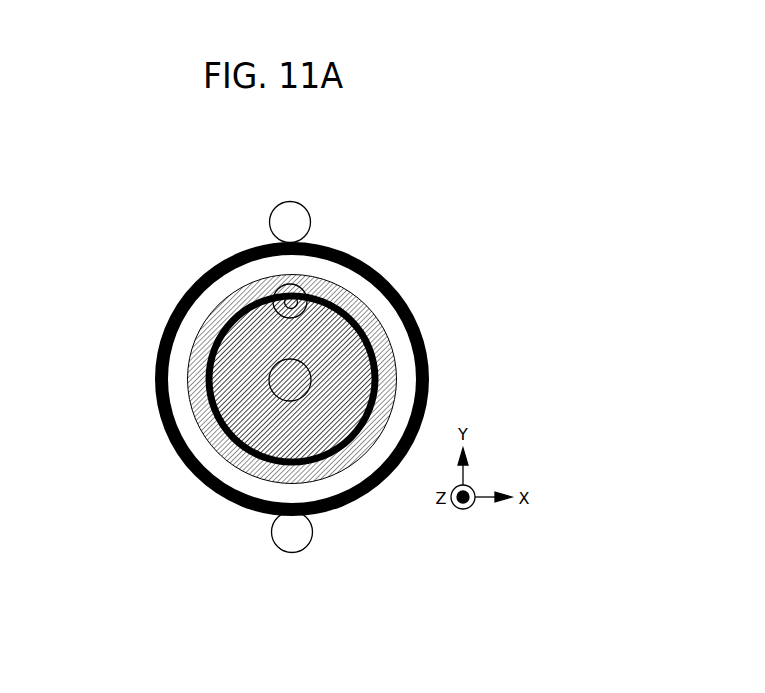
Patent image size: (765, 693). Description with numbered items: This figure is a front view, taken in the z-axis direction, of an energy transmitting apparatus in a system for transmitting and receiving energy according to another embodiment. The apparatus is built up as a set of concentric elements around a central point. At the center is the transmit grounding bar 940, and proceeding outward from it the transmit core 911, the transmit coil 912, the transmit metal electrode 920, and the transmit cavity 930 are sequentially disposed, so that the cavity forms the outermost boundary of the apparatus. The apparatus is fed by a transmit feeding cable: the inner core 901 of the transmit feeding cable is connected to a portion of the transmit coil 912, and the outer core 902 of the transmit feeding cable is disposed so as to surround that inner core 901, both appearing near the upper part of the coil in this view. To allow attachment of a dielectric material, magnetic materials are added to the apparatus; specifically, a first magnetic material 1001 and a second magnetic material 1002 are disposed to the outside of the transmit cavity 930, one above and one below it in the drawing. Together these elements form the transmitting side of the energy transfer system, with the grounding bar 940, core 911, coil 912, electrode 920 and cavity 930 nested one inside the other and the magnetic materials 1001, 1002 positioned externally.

The inner core of the transmit feeding cable 901 is at (274, 297).
The outer core of the transmit feeding cable 902 is at (305, 288).
The transmit core 911 is at (242, 420).
The transmit coil 912 is at (207, 362).
The transmit metal electrode 920 is at (230, 293).
The transmit cavity 930 is at (415, 320).
The transmit grounding bar 940 is at (297, 398).
The first magnetic material 1001 is at (290, 202).
The second magnetic material 1002 is at (290, 555).